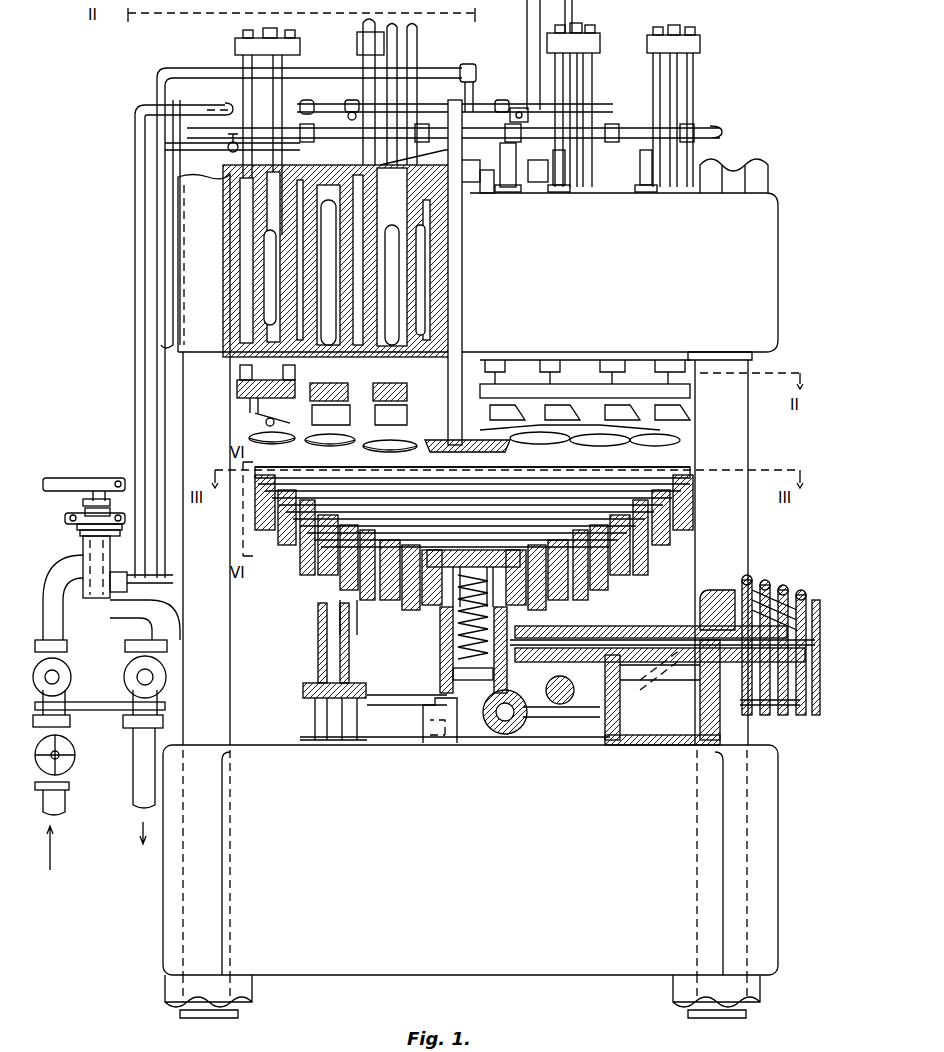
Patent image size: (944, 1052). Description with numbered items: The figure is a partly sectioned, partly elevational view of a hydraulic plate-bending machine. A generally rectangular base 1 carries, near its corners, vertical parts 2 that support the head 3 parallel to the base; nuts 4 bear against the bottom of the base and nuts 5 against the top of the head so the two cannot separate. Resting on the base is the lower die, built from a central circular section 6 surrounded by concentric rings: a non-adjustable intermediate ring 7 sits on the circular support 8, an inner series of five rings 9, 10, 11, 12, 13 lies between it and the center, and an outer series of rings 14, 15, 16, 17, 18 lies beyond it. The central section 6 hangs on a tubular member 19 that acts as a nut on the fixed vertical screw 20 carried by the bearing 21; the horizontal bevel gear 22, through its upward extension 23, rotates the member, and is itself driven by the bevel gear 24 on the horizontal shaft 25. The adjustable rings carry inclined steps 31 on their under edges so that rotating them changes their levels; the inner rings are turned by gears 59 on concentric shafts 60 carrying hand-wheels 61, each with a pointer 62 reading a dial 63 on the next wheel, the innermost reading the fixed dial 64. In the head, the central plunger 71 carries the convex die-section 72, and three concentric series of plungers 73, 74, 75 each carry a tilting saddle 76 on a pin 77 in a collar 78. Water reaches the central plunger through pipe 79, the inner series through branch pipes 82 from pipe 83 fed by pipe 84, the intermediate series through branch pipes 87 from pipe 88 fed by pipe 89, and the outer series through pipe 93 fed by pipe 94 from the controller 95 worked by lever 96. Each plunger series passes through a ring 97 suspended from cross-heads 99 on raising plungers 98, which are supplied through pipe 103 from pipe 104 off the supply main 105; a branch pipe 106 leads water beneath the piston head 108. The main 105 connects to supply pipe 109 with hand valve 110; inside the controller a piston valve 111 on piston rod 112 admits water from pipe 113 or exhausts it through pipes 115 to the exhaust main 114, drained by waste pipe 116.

The base 1 is at (470, 860).
The vertical parts 2 is at (467, 548).
The head 3 is at (478, 263).
The nuts 4 is at (462, 996).
The nuts 5 is at (768, 172).
The central circular section 6 is at (443, 592).
The intermediate ring 7 is at (617, 598).
The circular support 8 is at (315, 718).
The ring section 9 is at (354, 607).
The ring section 10 is at (374, 592).
The ring section 11 is at (391, 592).
The ring section 12 is at (410, 592).
The ring section 13 is at (425, 592).
The ring section 14 is at (320, 598).
The ring section 15 is at (305, 582).
The ring section 16 is at (282, 567).
The ring section 17 is at (262, 535).
The ring section 18 is at (255, 481).
The tubular member 19 is at (473, 621).
The vertical fixed screw 20 is at (457, 648).
The bearing 21 is at (452, 720).
The horizontal bevel gear 22 is at (435, 698).
The upward extension 23 is at (453, 670).
The bevel gear 24 is at (510, 735).
The horizontal shaft 25 is at (555, 717).
The inclined steps 31 is at (673, 555).
The gears 59 is at (554, 692).
The concentric shafts 60 is at (802, 647).
The hand-wheels 61 is at (773, 707).
The pointer 62 is at (760, 590).
The dial 63 is at (780, 684).
The fixed dial 64 is at (725, 580).
The central hydraulic plunger 71 is at (468, 265).
The circular die-section 72 is at (453, 442).
The plungers 73 is at (394, 285).
The plungers 74 is at (341, 261).
The plungers 75 is at (237, 381).
The tilting saddle 76 is at (335, 446).
The pin 77 is at (272, 445).
The collar 78 is at (372, 412).
The pipe 79 is at (167, 82).
The branch pipes 82 is at (500, 172).
The pipe 83 is at (518, 108).
The pipe 84 is at (224, 141).
The branch pipes 87 is at (325, 102).
The pipe 88 is at (501, 100).
The pipe 89 is at (173, 238).
The pipe 93 is at (628, 126).
The pipe 94 is at (157, 217).
The controller 95 is at (83, 536).
The lever 96 is at (65, 476).
The ring 97 is at (500, 390).
The hydraulic plungers 98 is at (417, 40).
The cross-heads 99 is at (235, 44).
The pipe 103 is at (165, 152).
The pipe 104 is at (135, 370).
The supply main 105 is at (70, 642).
The branch pipe 106 is at (465, 200).
The piston head 108 is at (487, 193).
The supply pipe 109 is at (66, 807).
The hand valve 110 is at (75, 767).
The piston valve 111 is at (147, 578).
The piston rod 112 is at (83, 506).
The pipe 113 is at (80, 630).
The exhaust main 114 is at (166, 677).
The pipes 115 is at (168, 627).
The waste pipe 116 is at (133, 742).